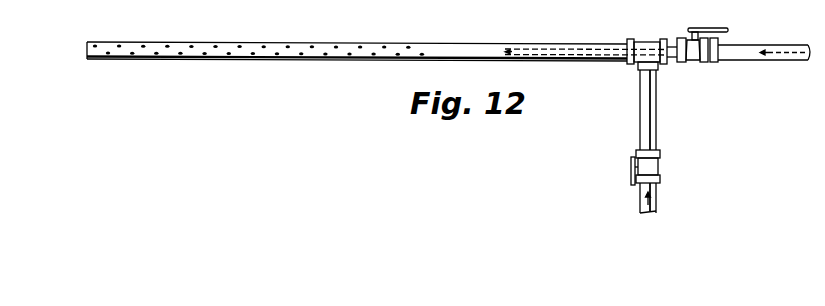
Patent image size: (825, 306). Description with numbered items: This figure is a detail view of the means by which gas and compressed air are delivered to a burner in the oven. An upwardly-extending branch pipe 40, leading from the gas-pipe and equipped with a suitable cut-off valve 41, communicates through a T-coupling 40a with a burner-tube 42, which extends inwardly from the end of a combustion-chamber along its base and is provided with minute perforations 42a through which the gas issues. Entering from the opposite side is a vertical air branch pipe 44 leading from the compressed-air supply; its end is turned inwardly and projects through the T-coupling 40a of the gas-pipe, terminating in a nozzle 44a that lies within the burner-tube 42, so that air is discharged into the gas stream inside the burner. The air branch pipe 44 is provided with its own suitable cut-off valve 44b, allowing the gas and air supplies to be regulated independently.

The branch pipe 40 is at (637, 117).
The T-coupling 40a is at (648, 42).
The cut-off valve 41 is at (632, 165).
The burner-tube 42 is at (446, 43).
The perforations 42a is at (181, 56).
The air branch pipe 44 is at (746, 47).
The nozzle 44a is at (533, 48).
The cut-off valve 44b is at (698, 62).